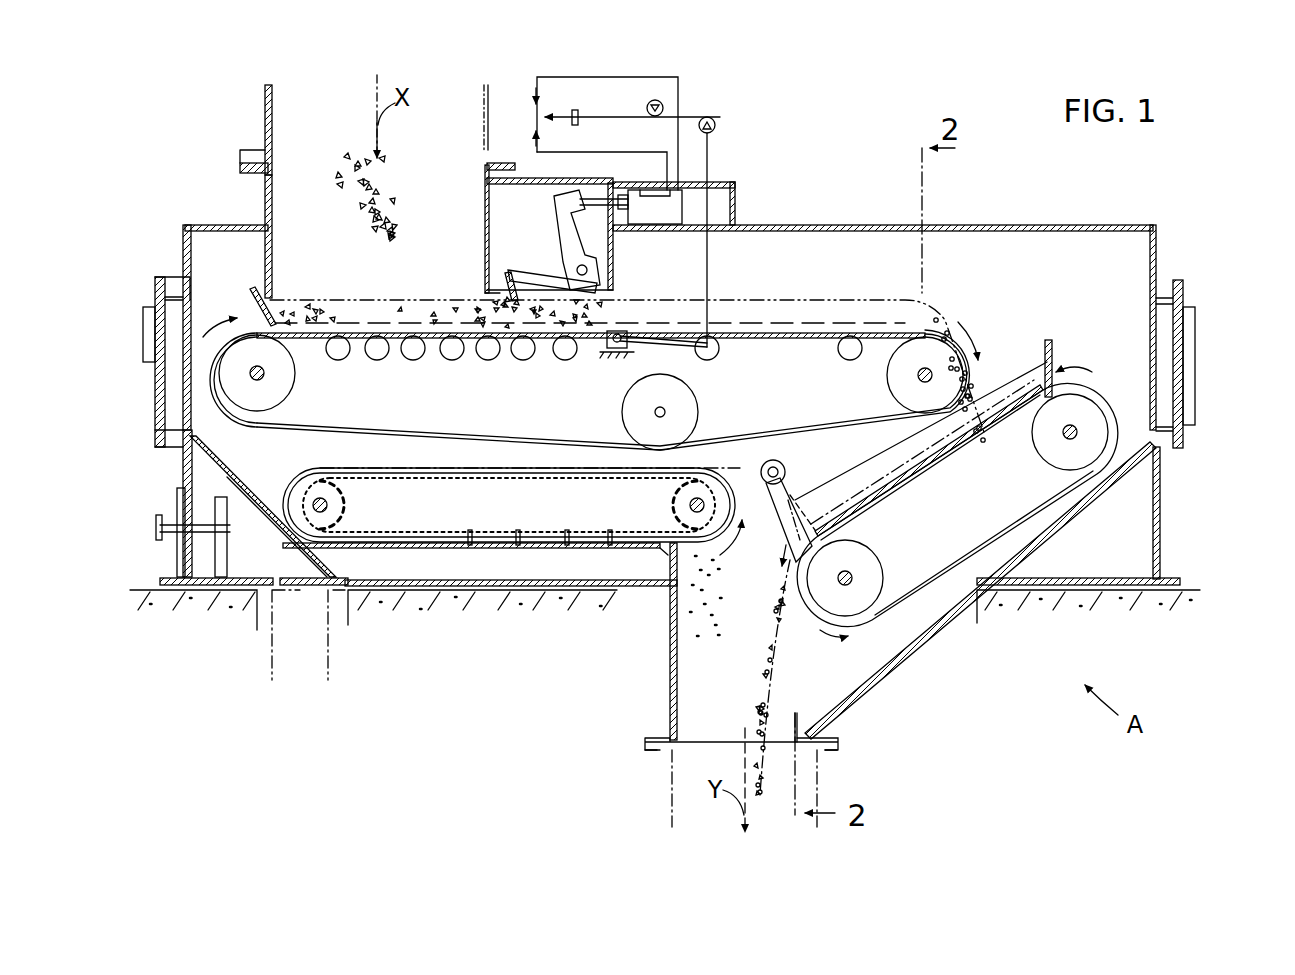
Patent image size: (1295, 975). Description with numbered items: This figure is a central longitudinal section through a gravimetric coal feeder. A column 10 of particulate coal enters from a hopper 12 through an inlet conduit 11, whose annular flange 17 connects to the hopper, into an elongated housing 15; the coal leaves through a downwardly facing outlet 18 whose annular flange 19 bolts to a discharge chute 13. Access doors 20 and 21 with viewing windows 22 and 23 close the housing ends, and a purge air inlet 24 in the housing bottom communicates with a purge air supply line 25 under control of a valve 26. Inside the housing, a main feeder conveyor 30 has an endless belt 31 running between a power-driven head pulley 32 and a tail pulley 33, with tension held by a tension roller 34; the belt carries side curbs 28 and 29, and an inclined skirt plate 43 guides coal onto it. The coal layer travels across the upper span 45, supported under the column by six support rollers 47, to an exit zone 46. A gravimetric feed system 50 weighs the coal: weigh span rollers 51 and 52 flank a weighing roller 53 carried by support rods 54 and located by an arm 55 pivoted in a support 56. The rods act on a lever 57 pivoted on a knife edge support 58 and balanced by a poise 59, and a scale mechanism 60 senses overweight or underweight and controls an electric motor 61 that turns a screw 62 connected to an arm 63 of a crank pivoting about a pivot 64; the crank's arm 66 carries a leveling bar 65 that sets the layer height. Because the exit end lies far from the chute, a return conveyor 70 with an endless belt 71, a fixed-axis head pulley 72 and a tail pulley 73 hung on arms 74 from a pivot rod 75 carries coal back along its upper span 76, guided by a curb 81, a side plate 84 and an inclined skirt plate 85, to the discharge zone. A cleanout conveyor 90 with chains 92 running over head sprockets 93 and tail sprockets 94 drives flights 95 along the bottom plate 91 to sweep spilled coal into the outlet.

The column of particulate coal 10 is at (336, 150).
The inlet conduit 11 is at (265, 190).
The hopper 12 is at (265, 100).
The discharge chute 13 is at (670, 787).
The housing 15 is at (1100, 225).
The annular flange 17 is at (240, 168).
The outlet 18 is at (670, 676).
The annular flange 19 is at (656, 738).
The access door 20 is at (155, 410).
The access door 21 is at (1183, 392).
The viewing window 22 is at (143, 340).
The viewing window 23 is at (1195, 325).
The purge air inlet 24 is at (290, 575).
The purge air supply line 25 is at (272, 652).
The valve 26 is at (176, 518).
The curb 28 is at (440, 436).
The curb 29 is at (252, 322).
The main feeder conveyor 30 is at (832, 276).
The endless belt 31 is at (371, 330).
The head pulley 32 is at (890, 386).
The tail pulley 33 is at (290, 380).
The tension roller 34 is at (623, 412).
The inclined skirt plate 43 is at (258, 292).
The upper span 45 is at (776, 322).
The exit zone 46 is at (988, 308).
The support rollers 47 is at (414, 360).
The gravimetric feed system 50 is at (745, 160).
The weigh span roller 51 is at (566, 360).
The weigh span roller 52 is at (846, 360).
The weighing roller 53 is at (712, 360).
The weighing roller support rods 54 is at (708, 272).
The arm 55 is at (642, 344).
The support 56 is at (615, 354).
The lever 57 is at (620, 118).
The knife edge support 58 is at (664, 104).
The poise 59 is at (575, 110).
The scale mechanism 60 is at (546, 122).
The electric motor 61 is at (682, 206).
The screw 62 is at (600, 200).
The arm 63 is at (562, 228).
The pivot 64 is at (588, 268).
The leveling bar 65 is at (507, 282).
The arm 66 is at (552, 276).
The return conveyor 70 is at (922, 612).
The endless belt 71 is at (1096, 396).
The head pulley 72 is at (1050, 450).
The tail pulley 73 is at (873, 562).
The arms 74 is at (790, 495).
The pivot rod 75 is at (762, 476).
The upper span 76 is at (911, 480).
The curb 81 is at (1000, 530).
The side plate 84 is at (992, 358).
The inclined skirt plate 85 is at (1053, 357).
The cleanout conveyor 90 is at (300, 466).
The bottom plate 91 is at (463, 549).
The chains 92 is at (464, 533).
The head sprockets 93 is at (673, 505).
The tail sprockets 94 is at (346, 506).
The flights 95 is at (521, 532).